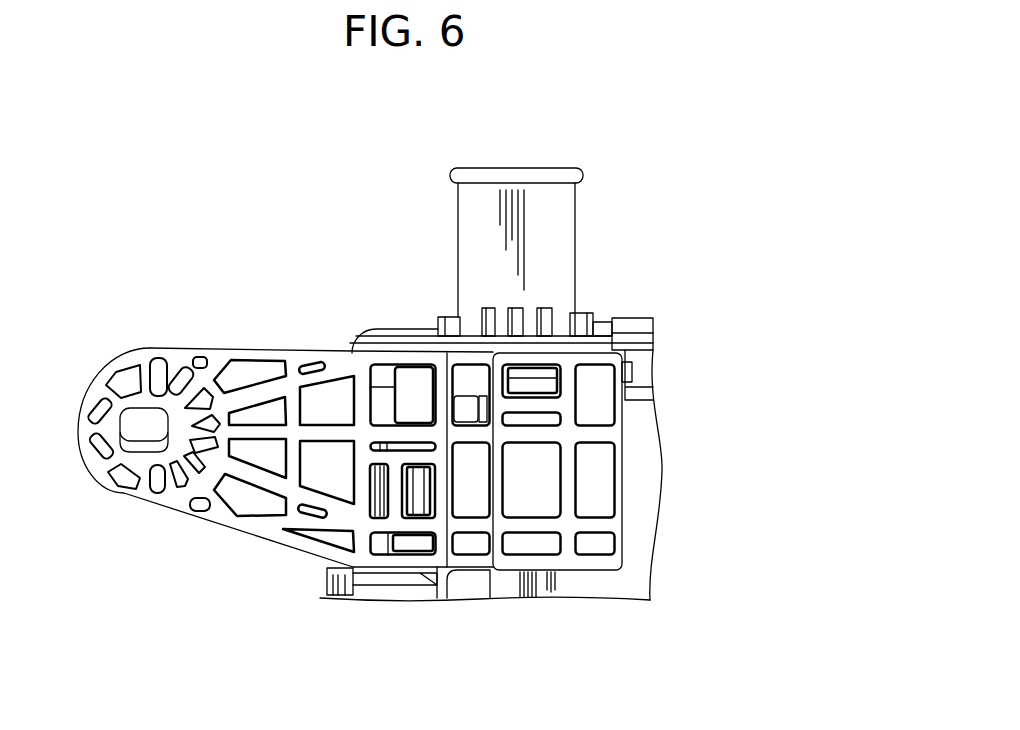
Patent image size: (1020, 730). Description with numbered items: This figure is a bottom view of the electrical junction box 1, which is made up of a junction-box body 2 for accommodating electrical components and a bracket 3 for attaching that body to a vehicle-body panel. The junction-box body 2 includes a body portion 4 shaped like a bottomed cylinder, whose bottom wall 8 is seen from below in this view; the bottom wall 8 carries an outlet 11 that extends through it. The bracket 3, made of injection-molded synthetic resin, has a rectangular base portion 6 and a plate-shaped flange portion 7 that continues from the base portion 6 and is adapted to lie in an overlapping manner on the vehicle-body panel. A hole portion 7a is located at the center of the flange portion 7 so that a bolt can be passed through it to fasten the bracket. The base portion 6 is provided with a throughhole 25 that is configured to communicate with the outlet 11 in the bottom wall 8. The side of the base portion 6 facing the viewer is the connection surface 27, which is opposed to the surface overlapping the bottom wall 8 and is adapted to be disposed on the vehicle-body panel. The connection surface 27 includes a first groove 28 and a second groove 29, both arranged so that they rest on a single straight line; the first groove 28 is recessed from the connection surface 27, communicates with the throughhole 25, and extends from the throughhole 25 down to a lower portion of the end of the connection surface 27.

The electrical junction box 1 is at (701, 148).
The junction-box body 2 is at (647, 288).
The bracket 3 is at (328, 663).
The body portion 4 is at (643, 316).
The base portion 6 is at (402, 561).
The flange portion 7 is at (240, 522).
The hole portion 7a is at (138, 433).
The bottom wall 8 is at (630, 583).
The outlet 11 is at (443, 351).
The throughhole 25 is at (467, 398).
The connection surface 27 is at (437, 557).
The first groove 28 is at (493, 315).
The second groove 29 is at (457, 560).